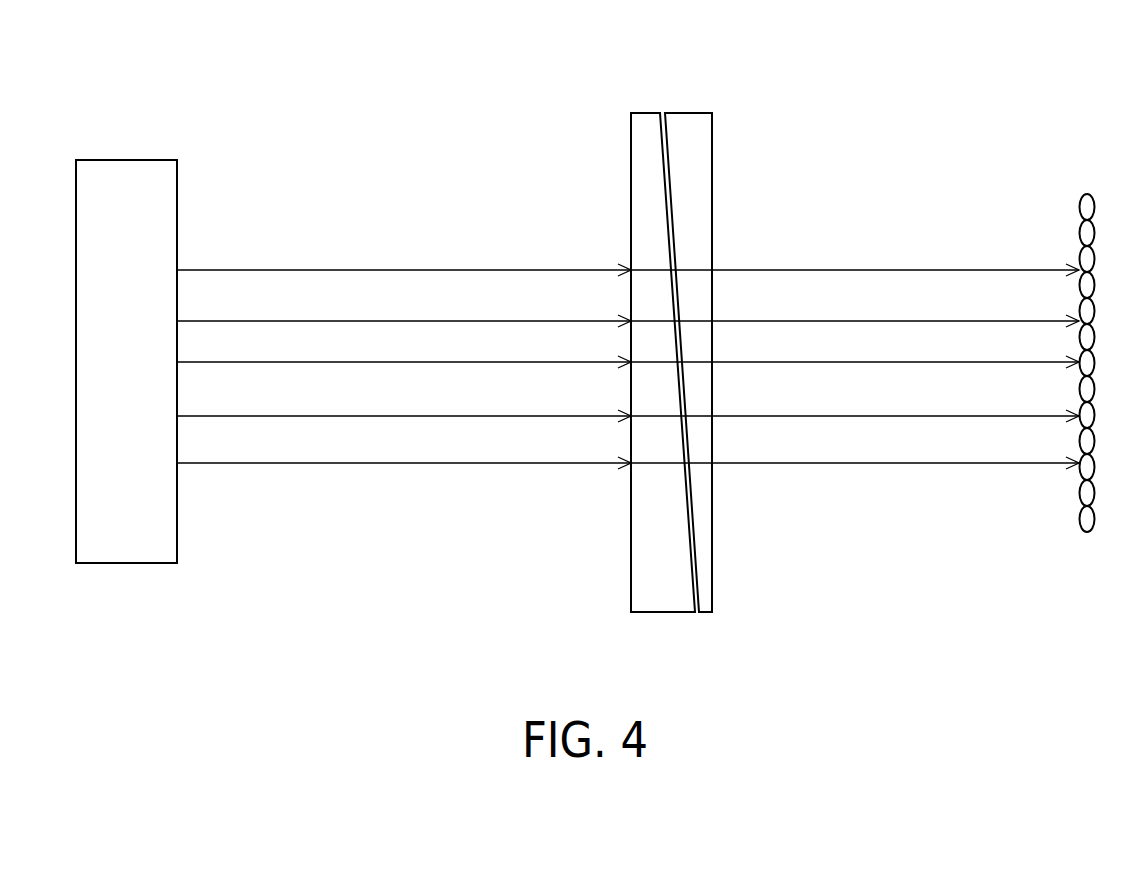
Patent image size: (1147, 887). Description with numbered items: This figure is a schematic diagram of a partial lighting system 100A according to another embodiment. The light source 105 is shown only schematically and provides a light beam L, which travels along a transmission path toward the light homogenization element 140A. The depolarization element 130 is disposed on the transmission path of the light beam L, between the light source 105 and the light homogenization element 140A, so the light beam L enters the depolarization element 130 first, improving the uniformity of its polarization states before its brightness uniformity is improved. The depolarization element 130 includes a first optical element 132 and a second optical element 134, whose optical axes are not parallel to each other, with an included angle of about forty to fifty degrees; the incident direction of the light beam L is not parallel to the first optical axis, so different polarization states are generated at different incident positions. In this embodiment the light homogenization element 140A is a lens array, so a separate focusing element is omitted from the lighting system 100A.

The lighting system 100A is at (243, 109).
The light source 105 is at (125, 160).
The light beam L is at (287, 464).
The depolarization element 130 is at (669, 316).
The first optical element 132 is at (646, 120).
The second optical element 134 is at (694, 120).
The light homogenization element 140A is at (1087, 194).